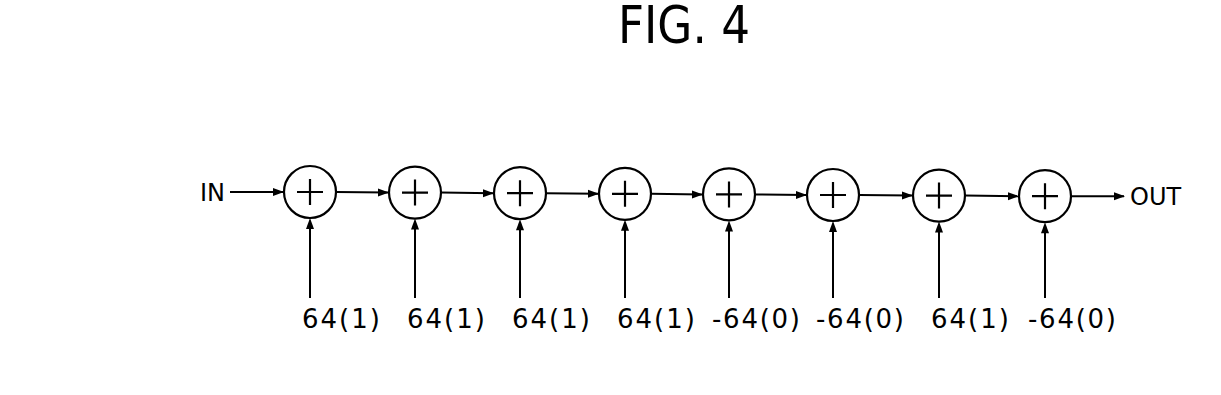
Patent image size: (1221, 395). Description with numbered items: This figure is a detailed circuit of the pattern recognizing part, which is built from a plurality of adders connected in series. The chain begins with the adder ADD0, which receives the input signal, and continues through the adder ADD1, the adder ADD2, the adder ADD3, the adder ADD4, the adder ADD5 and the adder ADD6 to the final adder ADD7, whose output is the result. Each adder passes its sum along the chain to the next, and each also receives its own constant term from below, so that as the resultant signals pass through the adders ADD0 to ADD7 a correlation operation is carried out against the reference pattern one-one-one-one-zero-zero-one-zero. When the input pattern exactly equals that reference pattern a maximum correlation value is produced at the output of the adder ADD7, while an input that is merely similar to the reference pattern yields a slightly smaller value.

The adder ADD0 is at (312, 166).
The adder ADD1 is at (417, 167).
The adder ADD2 is at (522, 167).
The adder ADD3 is at (627, 168).
The adder ADD4 is at (731, 168).
The adder ADD5 is at (835, 169).
The adder ADD6 is at (941, 170).
The adder ADD7 is at (1047, 170).